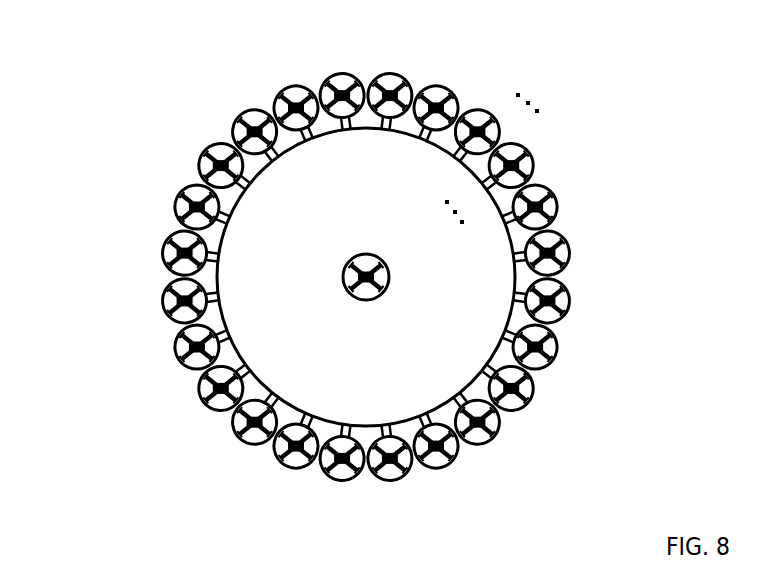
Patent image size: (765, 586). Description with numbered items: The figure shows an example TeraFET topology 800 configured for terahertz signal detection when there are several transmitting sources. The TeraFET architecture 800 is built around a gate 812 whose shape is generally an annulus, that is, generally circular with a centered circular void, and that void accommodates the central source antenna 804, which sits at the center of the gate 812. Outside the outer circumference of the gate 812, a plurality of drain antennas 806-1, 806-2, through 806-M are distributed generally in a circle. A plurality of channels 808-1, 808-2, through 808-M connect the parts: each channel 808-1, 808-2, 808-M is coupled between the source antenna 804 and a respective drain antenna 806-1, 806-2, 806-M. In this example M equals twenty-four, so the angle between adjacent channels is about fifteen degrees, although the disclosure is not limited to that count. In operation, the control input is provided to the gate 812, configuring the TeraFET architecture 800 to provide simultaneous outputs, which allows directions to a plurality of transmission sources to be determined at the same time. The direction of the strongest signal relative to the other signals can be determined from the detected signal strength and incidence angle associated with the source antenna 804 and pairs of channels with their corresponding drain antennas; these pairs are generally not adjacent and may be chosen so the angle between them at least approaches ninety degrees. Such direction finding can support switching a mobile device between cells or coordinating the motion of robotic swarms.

The TeraFET topology 800 is at (96, 38).
The central source antenna 804 is at (360, 300).
The drain antenna 806-M is at (337, 73).
The drain antenna 806-1 is at (389, 73).
The drain antenna 806-2 is at (447, 89).
The channel 808-M is at (345, 131).
The channel 808-1 is at (391, 130).
The channel 808-2 is at (424, 138).
The gate 812 is at (429, 340).